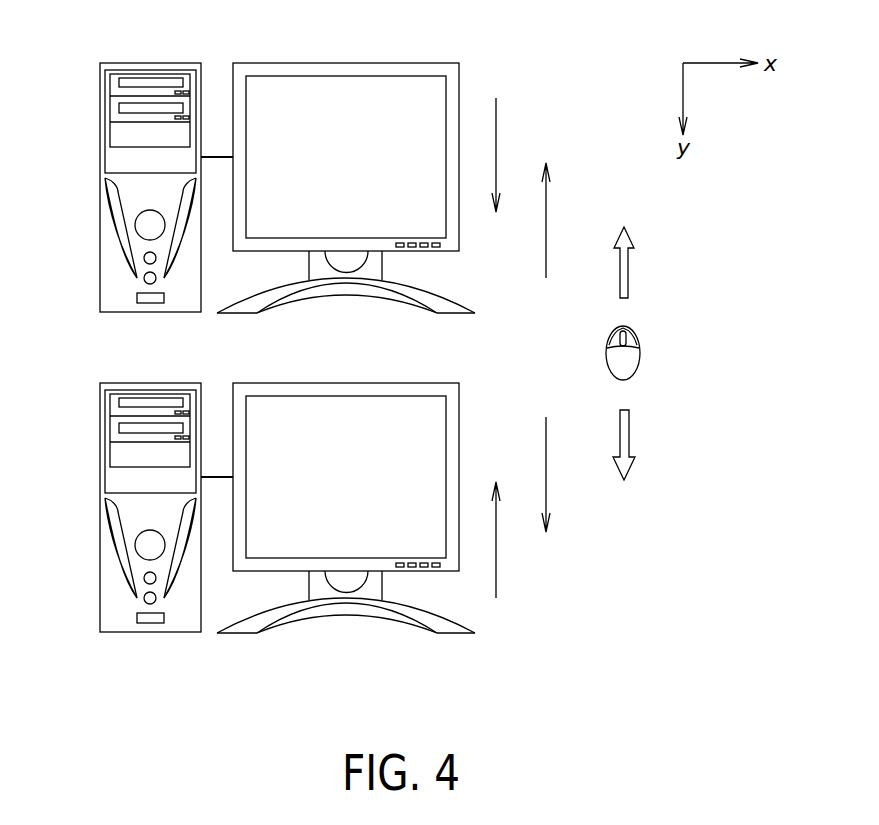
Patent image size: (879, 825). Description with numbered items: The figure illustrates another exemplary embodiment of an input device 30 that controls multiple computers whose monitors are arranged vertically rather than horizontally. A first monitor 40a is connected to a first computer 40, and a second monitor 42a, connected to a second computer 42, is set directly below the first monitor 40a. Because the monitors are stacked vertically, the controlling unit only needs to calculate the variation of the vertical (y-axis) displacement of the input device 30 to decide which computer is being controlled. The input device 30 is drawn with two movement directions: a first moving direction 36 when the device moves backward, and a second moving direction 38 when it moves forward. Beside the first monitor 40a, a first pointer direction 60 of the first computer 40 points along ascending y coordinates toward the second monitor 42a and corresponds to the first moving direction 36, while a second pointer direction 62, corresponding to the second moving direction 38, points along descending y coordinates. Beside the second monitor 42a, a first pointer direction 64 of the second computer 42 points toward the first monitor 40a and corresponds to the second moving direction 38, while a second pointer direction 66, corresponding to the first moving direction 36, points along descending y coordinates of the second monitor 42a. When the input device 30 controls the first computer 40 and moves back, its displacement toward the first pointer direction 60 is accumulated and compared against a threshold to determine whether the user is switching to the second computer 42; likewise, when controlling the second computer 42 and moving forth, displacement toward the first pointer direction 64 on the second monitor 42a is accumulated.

The input device 30 is at (640, 347).
The first moving direction 36 is at (629, 433).
The second moving direction 38 is at (628, 273).
The first computer 40 is at (100, 133).
The first monitor 40a is at (347, 62).
The second computer 42 is at (100, 453).
The second monitor 42a is at (347, 382).
The first pointer direction 60 is at (496, 133).
The second pointer direction 62 is at (546, 220).
The first pointer direction 64 is at (496, 560).
The second pointer direction 66 is at (546, 473).